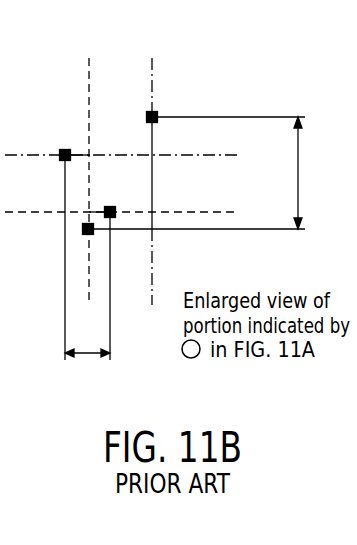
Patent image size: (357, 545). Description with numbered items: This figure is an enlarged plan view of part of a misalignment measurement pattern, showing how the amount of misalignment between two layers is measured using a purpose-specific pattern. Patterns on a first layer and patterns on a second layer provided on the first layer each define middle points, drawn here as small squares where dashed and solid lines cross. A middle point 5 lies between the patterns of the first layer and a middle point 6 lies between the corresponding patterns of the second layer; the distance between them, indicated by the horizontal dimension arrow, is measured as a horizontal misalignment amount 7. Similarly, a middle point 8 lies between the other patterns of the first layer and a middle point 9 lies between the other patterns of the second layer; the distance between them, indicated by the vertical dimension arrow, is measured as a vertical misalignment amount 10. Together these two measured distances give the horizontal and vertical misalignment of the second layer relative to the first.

The middle point 5 is at (112, 207).
The middle point 6 is at (61, 151).
The horizontal misalignment amount 7 is at (87, 366).
The middle point 8 is at (83, 229).
The middle point 9 is at (156, 112).
The vertical misalignment amount 10 is at (312, 173).